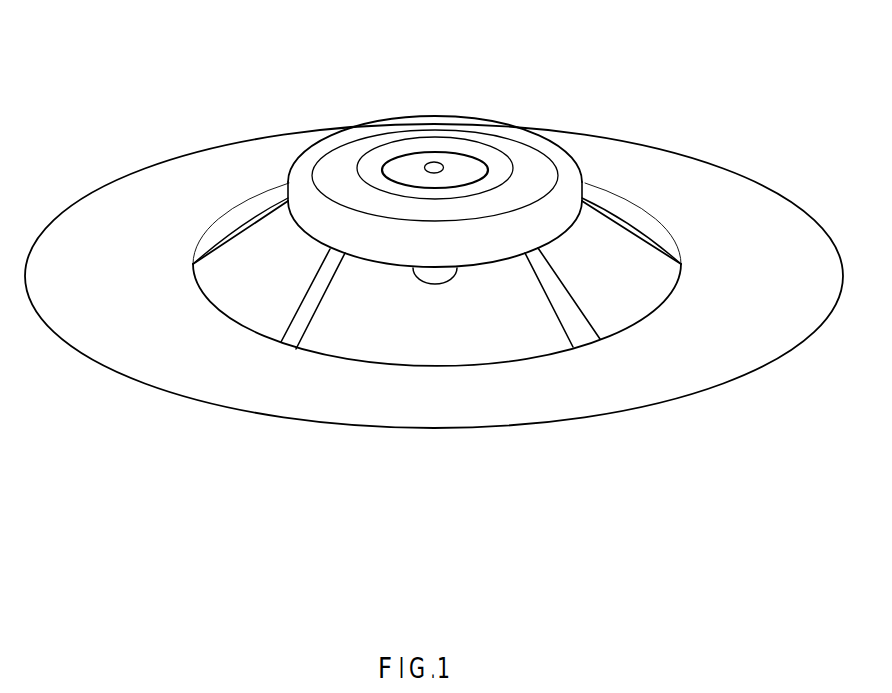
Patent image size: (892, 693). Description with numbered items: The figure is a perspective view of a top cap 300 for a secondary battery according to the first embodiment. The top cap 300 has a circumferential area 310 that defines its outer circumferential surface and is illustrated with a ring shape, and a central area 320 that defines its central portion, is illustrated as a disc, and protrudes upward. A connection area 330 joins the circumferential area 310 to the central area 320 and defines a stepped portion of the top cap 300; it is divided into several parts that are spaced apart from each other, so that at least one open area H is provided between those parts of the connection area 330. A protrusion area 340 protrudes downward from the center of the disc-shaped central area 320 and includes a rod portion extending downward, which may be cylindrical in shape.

The top cap 300 is at (299, 72).
The circumferential area 310 is at (177, 170).
The central area 320 is at (442, 126).
The connection area 330 is at (252, 293).
The protrusion area 340 is at (428, 286).
The open area H is at (473, 341).